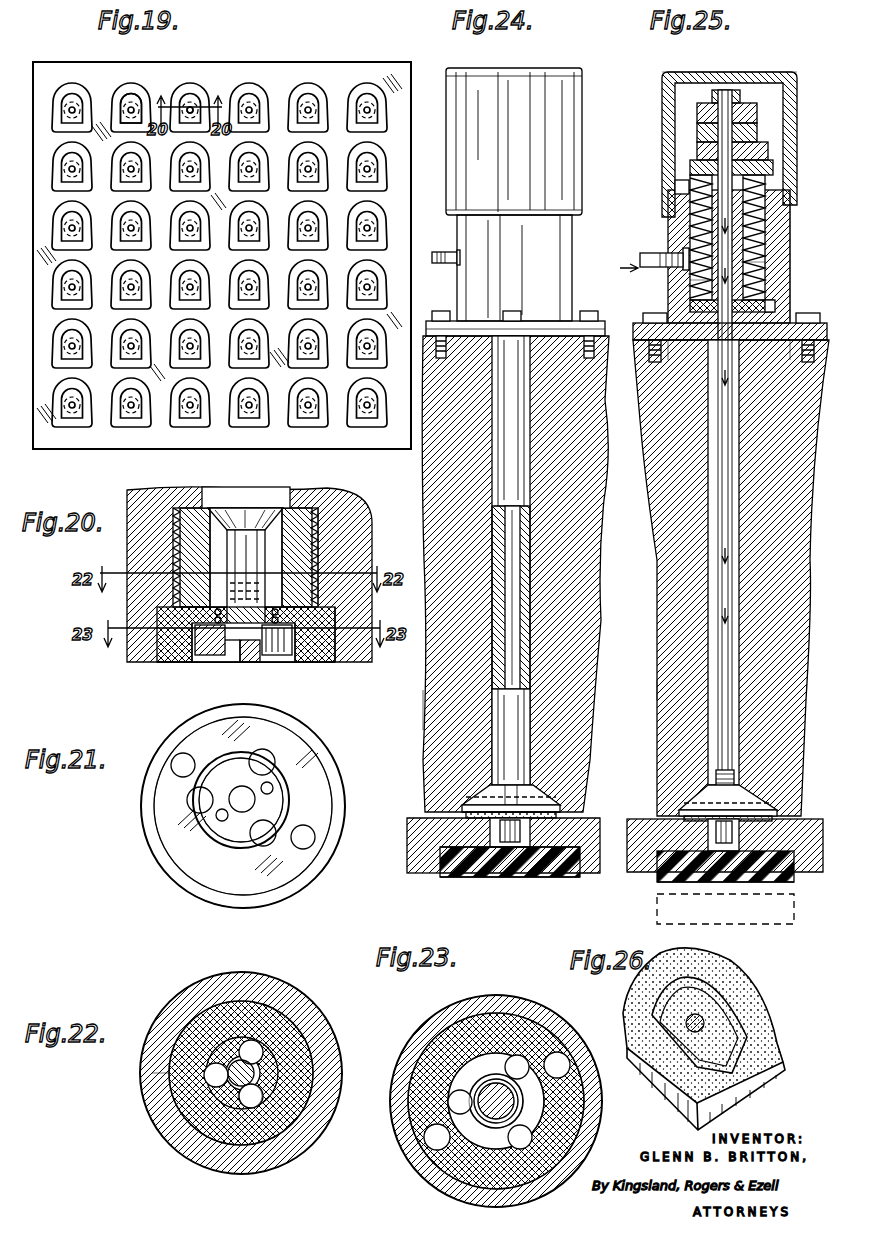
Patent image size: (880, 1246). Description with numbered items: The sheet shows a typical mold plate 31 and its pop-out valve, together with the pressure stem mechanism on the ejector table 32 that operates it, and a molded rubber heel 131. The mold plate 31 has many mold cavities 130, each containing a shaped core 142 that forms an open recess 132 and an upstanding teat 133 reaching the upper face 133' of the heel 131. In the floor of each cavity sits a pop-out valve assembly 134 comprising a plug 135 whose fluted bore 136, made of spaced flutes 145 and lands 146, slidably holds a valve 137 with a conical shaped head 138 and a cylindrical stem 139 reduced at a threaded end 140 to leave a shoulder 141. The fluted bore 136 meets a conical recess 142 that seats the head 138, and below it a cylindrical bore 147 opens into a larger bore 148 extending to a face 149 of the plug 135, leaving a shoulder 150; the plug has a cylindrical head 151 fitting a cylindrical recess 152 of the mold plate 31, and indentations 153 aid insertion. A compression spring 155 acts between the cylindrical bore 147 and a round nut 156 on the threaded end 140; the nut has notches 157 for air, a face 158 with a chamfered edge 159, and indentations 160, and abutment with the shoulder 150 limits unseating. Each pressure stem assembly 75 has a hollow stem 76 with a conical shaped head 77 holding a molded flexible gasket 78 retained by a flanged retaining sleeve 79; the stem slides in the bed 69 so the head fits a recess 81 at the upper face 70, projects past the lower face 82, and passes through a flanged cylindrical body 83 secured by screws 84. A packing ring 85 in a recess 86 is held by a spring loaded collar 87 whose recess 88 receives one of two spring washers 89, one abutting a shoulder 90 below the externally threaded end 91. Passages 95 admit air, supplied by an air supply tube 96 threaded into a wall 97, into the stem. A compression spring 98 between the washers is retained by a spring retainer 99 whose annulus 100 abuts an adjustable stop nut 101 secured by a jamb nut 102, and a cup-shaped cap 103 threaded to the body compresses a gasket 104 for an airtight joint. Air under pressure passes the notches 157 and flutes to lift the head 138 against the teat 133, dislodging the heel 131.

In FIG. 19, the mold plate 31 is at (355, 62).
In FIG. 20, the mold plate 31 is at (352, 510).
In FIG. 21, the mold plate 31 is at (170, 876).
In FIG. 22, the mold plate 31 is at (297, 1160).
In FIG. 23, the mold plate 31 is at (432, 1170).
In FIG. 25, the mold plate 31 is at (800, 884).
In FIG. 24, the ejector table 32 is at (413, 711).
In FIG. 25, the ejector table 32 is at (647, 694).
In FIG. 24, the bed 69 is at (578, 526).
In FIG. 25, the bed 69 is at (790, 660).
In FIG. 24, the upper face 70 is at (575, 812).
In FIG. 25, the upper face 70 is at (792, 860).
In FIG. 24, the pressure stem assembly 75 is at (559, 57).
In FIG. 25, the pressure stem assembly 75 is at (775, 56).
In FIG. 24, the hollow stem 76 is at (516, 660).
In FIG. 25, the hollow stem 76 is at (732, 632).
In FIG. 24, the conical shaped head 77 is at (486, 790).
In FIG. 25, the conical shaped head 77 is at (700, 800).
In FIG. 24, the molded flexible gasket 78 is at (470, 810).
In FIG. 25, the molded flexible gasket 78 is at (680, 813).
In FIG. 25, the flanged retaining sleeve 79 is at (718, 792).
In FIG. 24, the recess 81 is at (480, 800).
In FIG. 25, the recess 81 is at (690, 806).
In FIG. 24, the lower face 82 is at (540, 326).
In FIG. 25, the lower face 82 is at (642, 345).
In FIG. 24, the flanged cylindrical body 83 is at (572, 256).
In FIG. 25, the flanged cylindrical body 83 is at (790, 262).
In FIG. 24, the screws 84 is at (455, 312).
In FIG. 25, the screws 84 is at (655, 315).
In FIG. 25, the molded flexible packing ring 85 is at (702, 352).
In FIG. 25, the recess 86 is at (682, 345).
In FIG. 25, the spring loaded collar 87 is at (776, 306).
In FIG. 25, the recess 88 is at (786, 290).
In FIG. 25, the spring washers 89 is at (775, 170).
In FIG. 25, the shoulder 90 is at (690, 281).
In FIG. 25, the externally threaded end 91 is at (722, 90).
In FIG. 25, the passages 95 is at (700, 240).
In FIG. 24, the individual air supply tube 96 is at (446, 253).
In FIG. 25, the individual air supply tube 96 is at (650, 260).
In FIG. 24, the wall 97 is at (464, 270).
In FIG. 25, the wall 97 is at (690, 255).
In FIG. 25, the compression spring 98 is at (762, 262).
In FIG. 25, the spring retainer 99 is at (770, 152).
In FIG. 25, the annulus 100 is at (758, 132).
In FIG. 25, the adjustable stop nut 101 is at (758, 113).
In FIG. 25, the jamb nut 102 is at (742, 100).
In FIG. 24, the cup-shaped cap 103 is at (568, 126).
In FIG. 25, the cup-shaped cap 103 is at (775, 72).
In FIG. 25, the gasket 104 is at (672, 185).
In FIG. 19, the mold cavities 130 is at (96, 80).
In FIG. 21, the mold cavities 130 is at (178, 882).
In FIG. 24, the mold cavities 130 is at (595, 874).
In FIG. 25, the mold cavities 130 is at (648, 840).
In FIG. 24, the rubber heel 131 is at (570, 882).
In FIG. 25, the rubber heel 131 is at (740, 928).
In FIG. 26, the rubber heel 131 is at (776, 990).
In FIG. 24, the open recess 132 is at (454, 880).
In FIG. 25, the open recess 132 is at (672, 884).
In FIG. 26, the open recess 132 is at (737, 1030).
In FIG. 24, the upstanding teat 133 is at (510, 869).
In FIG. 25, the upstanding teat 133 is at (725, 881).
In FIG. 26, the upstanding teat 133 is at (705, 1009).
In FIG. 24, the upper face 133' is at (486, 855).
In FIG. 26, the upper face 133' is at (799, 1041).
In FIG. 20, the pop-out valve assembly 134 is at (254, 492).
In FIG. 21, the pop-out valve assembly 134 is at (165, 870).
In FIG. 24, the pop-out valve assembly 134 is at (440, 846).
In FIG. 20, the plug 135 is at (175, 541).
In FIG. 22, the plug 135 is at (270, 1018).
In FIG. 23, the plug 135 is at (495, 1010).
In FIG. 20, the fluted bore 136 is at (210, 590).
In FIG. 22, the fluted bore 136 is at (250, 1150).
In FIG. 20, the valve 137 is at (266, 548).
In FIG. 23, the valve 137 is at (490, 1082).
In FIG. 19, the conical shaped head 138 is at (131, 98).
In FIG. 20, the conical shaped head 138 is at (233, 522).
In FIG. 20, the cylindrical stem 139 is at (292, 598).
In FIG. 22, the cylindrical stem 139 is at (228, 1090).
In FIG. 23, the cylindrical stem 139 is at (452, 1060).
In FIG. 24, the cylindrical stem 139 is at (524, 792).
In FIG. 20, the threaded end 140 is at (252, 662).
In FIG. 21, the threaded end 140 is at (241, 810).
In FIG. 20, the shoulder 141 is at (245, 662).
In FIG. 19, the cores 142 is at (190, 108).
In FIG. 20, the cores 142 is at (332, 522).
In FIG. 24, the cores 142 is at (481, 882).
In FIG. 25, the cores 142 is at (692, 884).
In FIG. 20, the flutes 145 is at (203, 530).
In FIG. 22, the flutes 145 is at (265, 1052).
In FIG. 23, the flutes 145 is at (445, 1045).
In FIG. 22, the lands 146 is at (240, 1040).
In FIG. 23, the lands 146 is at (430, 1070).
In FIG. 20, the cylindrical bore 147 is at (355, 655).
In FIG. 20, the bore 148 is at (195, 648).
In FIG. 23, the bore 148 is at (545, 1100).
In FIG. 20, the face 149 is at (172, 665).
In FIG. 20, the shoulder 150 is at (298, 655).
In FIG. 20, the cylindrical head 151 is at (345, 655).
In FIG. 21, the cylindrical head 151 is at (165, 798).
In FIG. 22, the cylindrical head 151 is at (152, 1068).
In FIG. 23, the cylindrical head 151 is at (515, 1030).
In FIG. 20, the cylindrical recess 152 is at (157, 612).
In FIG. 21, the cylindrical recess 152 is at (282, 895).
In FIG. 23, the cylindrical recess 152 is at (425, 1150).
In FIG. 24, the cylindrical recess 152 is at (464, 828).
In FIG. 21, the indentations 153 is at (175, 766).
In FIG. 23, the indentations 153 is at (570, 1067).
In FIG. 20, the compression spring 155 is at (282, 662).
In FIG. 22, the compression spring 155 is at (240, 1150).
In FIG. 23, the compression spring 155 is at (458, 1097).
In FIG. 20, the nut 156 is at (215, 655).
In FIG. 23, the nut 156 is at (500, 1192).
In FIG. 21, the notches 157 is at (200, 805).
In FIG. 23, the notches 157 is at (522, 1062).
In FIG. 20, the face 158 is at (230, 663).
In FIG. 20, the chamfered edge 159 is at (192, 662).
In FIG. 21, the chamfered edge 159 is at (243, 848).
In FIG. 21, the indentations 160 is at (222, 815).